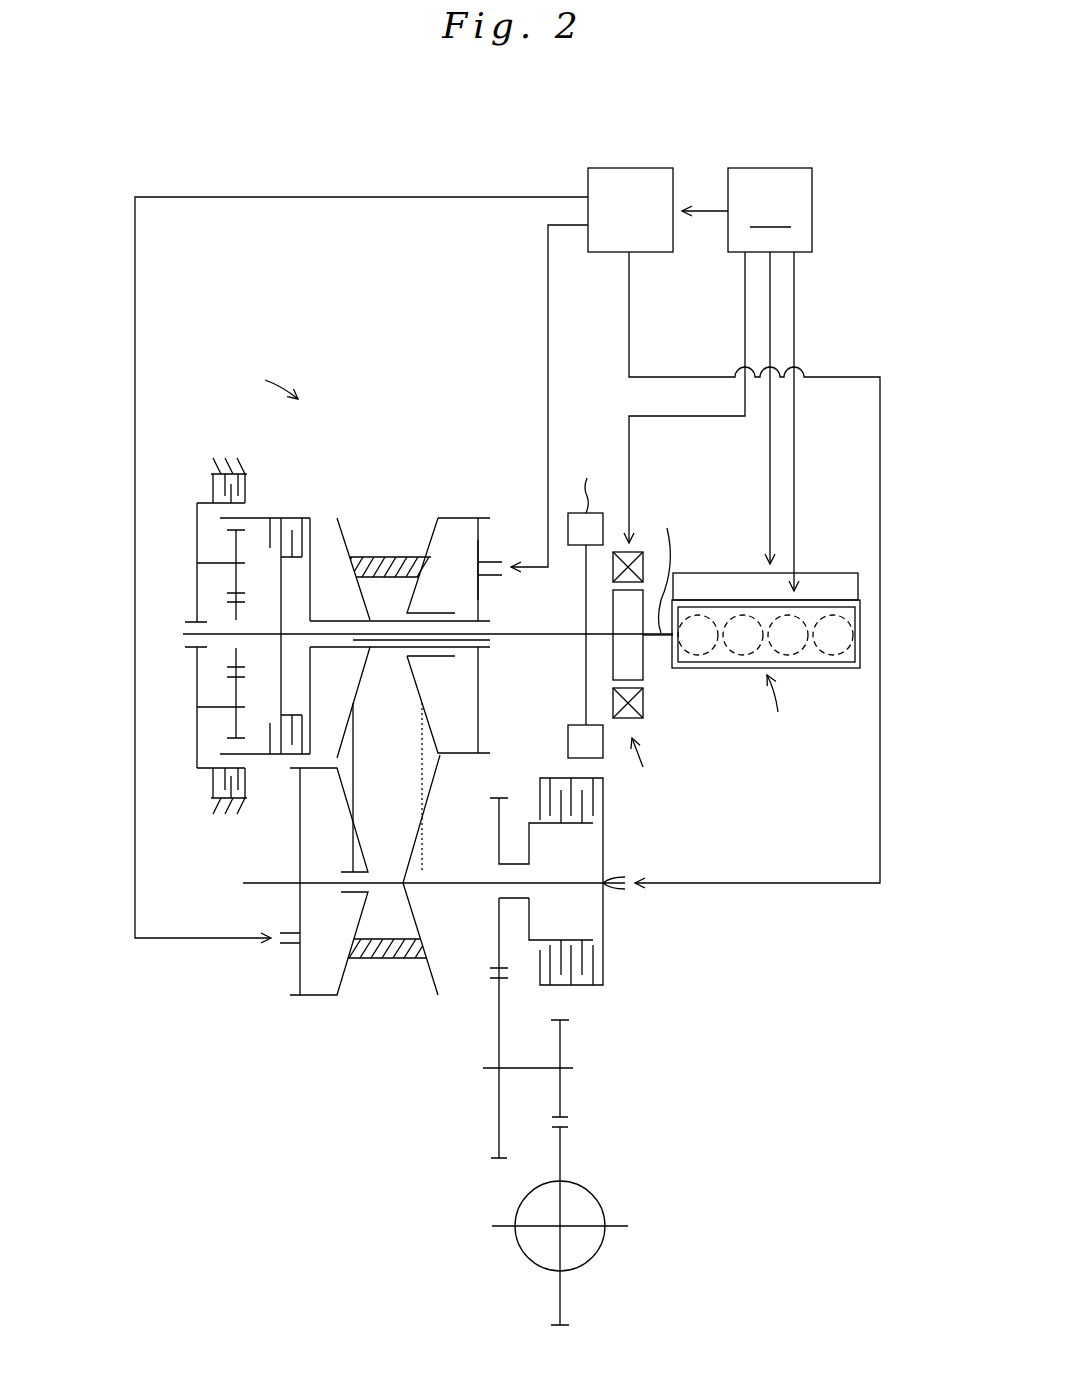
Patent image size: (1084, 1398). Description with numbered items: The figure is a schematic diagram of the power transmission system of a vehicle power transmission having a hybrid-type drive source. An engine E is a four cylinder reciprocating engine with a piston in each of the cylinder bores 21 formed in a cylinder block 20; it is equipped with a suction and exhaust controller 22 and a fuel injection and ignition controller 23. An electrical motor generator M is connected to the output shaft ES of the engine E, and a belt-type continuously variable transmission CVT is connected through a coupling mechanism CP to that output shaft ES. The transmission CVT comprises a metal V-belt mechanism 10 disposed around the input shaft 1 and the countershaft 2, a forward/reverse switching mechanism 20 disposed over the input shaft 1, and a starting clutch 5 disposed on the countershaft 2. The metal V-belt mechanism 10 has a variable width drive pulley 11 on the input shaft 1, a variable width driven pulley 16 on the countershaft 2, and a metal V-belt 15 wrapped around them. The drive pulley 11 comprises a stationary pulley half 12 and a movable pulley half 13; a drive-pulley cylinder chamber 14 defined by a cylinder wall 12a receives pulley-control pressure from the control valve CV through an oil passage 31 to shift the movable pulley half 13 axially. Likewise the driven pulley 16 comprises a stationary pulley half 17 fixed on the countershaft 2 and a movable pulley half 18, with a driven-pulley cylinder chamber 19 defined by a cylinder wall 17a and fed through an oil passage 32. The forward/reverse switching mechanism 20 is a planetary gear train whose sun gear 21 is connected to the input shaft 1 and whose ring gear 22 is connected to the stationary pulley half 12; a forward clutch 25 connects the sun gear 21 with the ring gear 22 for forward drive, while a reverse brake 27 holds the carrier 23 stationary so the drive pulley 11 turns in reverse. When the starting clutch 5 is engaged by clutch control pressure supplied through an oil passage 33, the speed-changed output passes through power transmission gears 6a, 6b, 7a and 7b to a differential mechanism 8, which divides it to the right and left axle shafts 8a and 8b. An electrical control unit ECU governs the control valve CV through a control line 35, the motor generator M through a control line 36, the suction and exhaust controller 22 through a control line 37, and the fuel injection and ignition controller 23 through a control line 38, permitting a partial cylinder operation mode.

The input shaft 1 is at (541, 642).
The countershaft 2 is at (459, 885).
The starting clutch 5 is at (624, 965).
The power transmission gear 6a is at (499, 830).
The power transmission gear 6b is at (496, 1161).
The power transmission gear 7a is at (565, 1043).
The power transmission gear 7b is at (565, 1155).
The differential mechanism 8 is at (527, 1258).
The axle shaft 8a is at (500, 1226).
The axle shaft 8b is at (619, 1225).
The metal V-belt mechanism 10 is at (448, 455).
The variable width drive pulley 11 is at (468, 506).
The stationary pulley half 12 is at (349, 531).
The cylinder wall 12a is at (480, 597).
The movable pulley half 13 is at (431, 531).
The drive-pulley cylinder chamber 14 is at (459, 581).
The metal V-belt 15 is at (424, 757).
The variable width driven pulley 16 is at (349, 1003).
The stationary pulley half 17 is at (432, 982).
The cylinder wall 17a is at (298, 846).
The movable pulley half 18 is at (344, 976).
The driven-pulley cylinder chamber 19 is at (340, 861).
The forward/reverse switching mechanism 20 is at (734, 674).
The sun gear 21 is at (743, 604).
The ring gear 22 is at (812, 605).
The carrier 23 is at (689, 573).
The forward clutch 25 is at (288, 519).
The reverse brake 27 is at (214, 483).
The oil passage 31 is at (549, 312).
The oil passage 32 is at (360, 197).
The oil passage 33 is at (846, 378).
The control line 35 is at (701, 207).
The control line 36 is at (687, 418).
The control line 37 is at (796, 488).
The control line 38 is at (772, 450).
The control valve CV is at (630, 210).
The electrical control unit ECU is at (770, 210).
The coupling mechanism CP is at (585, 606).
The output shaft of the engine ES is at (660, 570).
The electrical motor generator M is at (633, 670).
The engine E is at (766, 667).
The belt-type continuously variable transmission CVT is at (261, 384).